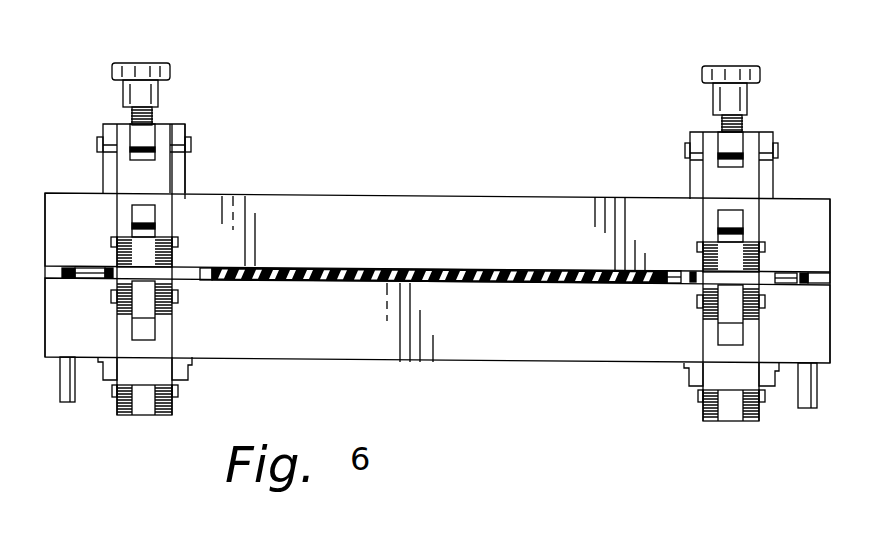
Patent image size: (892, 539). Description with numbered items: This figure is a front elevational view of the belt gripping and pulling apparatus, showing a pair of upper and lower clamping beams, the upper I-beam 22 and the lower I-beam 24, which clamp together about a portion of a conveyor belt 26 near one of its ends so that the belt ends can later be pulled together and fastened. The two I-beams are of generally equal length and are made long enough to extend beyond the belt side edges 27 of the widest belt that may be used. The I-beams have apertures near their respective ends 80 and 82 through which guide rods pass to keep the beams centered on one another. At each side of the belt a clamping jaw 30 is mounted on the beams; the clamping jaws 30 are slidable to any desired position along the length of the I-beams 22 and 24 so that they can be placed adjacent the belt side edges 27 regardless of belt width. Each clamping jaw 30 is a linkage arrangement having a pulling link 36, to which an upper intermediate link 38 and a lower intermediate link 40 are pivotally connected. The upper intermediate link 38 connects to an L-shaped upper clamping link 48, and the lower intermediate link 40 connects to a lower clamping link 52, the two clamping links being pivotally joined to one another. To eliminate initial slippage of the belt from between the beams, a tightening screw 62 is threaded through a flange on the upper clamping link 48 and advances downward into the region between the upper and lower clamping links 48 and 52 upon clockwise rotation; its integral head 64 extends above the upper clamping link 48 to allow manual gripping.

The upper I-beam 22 is at (51, 188).
The lower I-beam 24 is at (50, 360).
The conveyor belt 26 is at (457, 284).
The belt side edge 27 is at (200, 280).
The clamping jaw 30 is at (88, 128).
The pulling link 36 is at (150, 267).
The upper intermediate link 38 is at (157, 173).
The lower intermediate link 40 is at (158, 353).
The upper clamping link 48 is at (190, 187).
The lower clamping link 52 is at (182, 370).
The tightening screw 62 is at (155, 112).
The head 64 is at (150, 63).
The end 80 is at (45, 195).
The end 82 is at (48, 358).